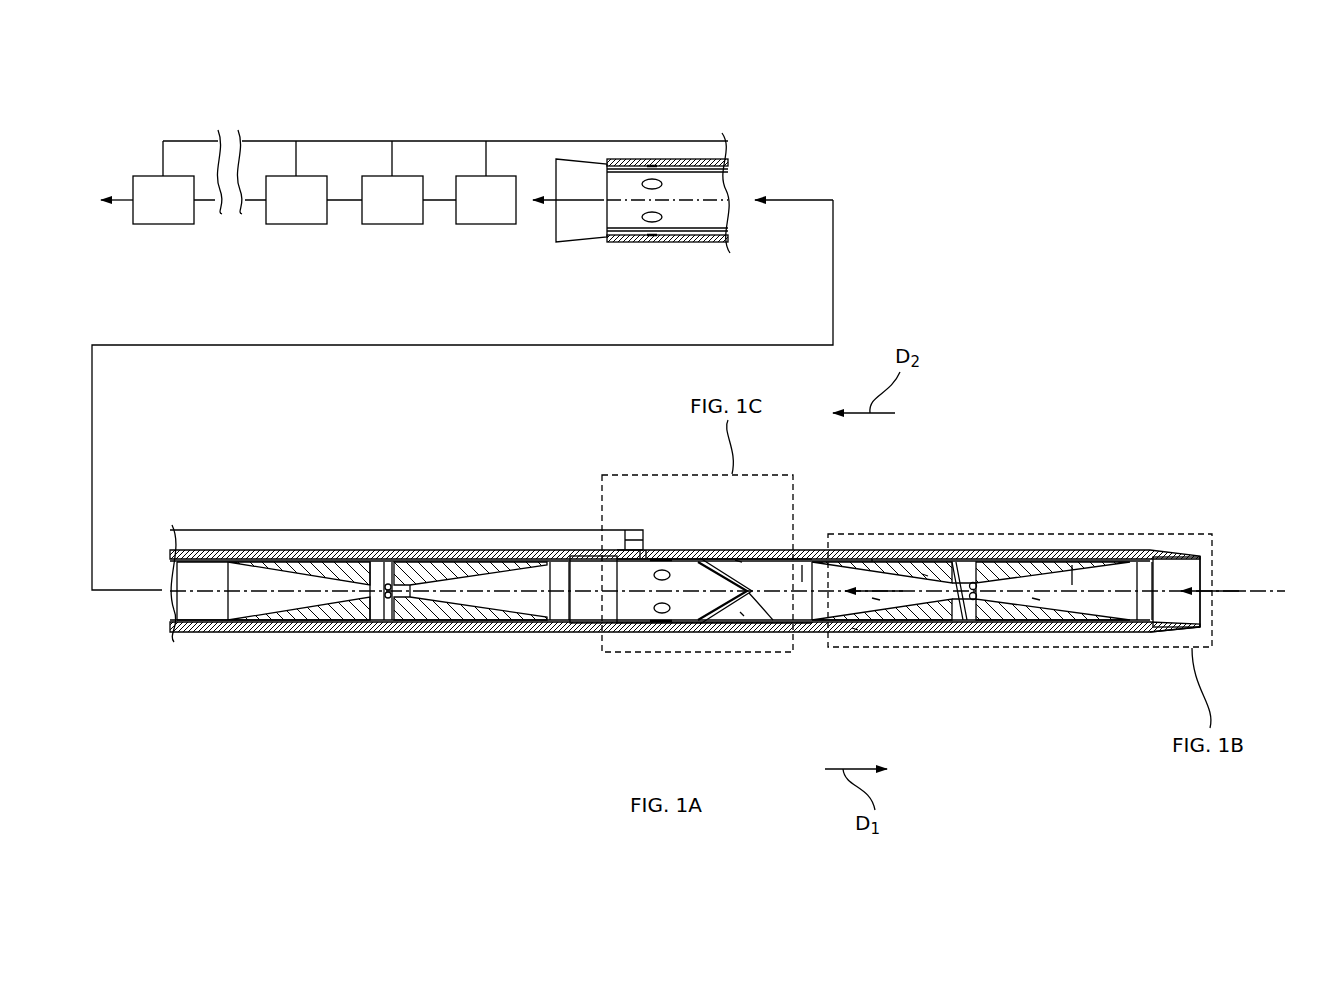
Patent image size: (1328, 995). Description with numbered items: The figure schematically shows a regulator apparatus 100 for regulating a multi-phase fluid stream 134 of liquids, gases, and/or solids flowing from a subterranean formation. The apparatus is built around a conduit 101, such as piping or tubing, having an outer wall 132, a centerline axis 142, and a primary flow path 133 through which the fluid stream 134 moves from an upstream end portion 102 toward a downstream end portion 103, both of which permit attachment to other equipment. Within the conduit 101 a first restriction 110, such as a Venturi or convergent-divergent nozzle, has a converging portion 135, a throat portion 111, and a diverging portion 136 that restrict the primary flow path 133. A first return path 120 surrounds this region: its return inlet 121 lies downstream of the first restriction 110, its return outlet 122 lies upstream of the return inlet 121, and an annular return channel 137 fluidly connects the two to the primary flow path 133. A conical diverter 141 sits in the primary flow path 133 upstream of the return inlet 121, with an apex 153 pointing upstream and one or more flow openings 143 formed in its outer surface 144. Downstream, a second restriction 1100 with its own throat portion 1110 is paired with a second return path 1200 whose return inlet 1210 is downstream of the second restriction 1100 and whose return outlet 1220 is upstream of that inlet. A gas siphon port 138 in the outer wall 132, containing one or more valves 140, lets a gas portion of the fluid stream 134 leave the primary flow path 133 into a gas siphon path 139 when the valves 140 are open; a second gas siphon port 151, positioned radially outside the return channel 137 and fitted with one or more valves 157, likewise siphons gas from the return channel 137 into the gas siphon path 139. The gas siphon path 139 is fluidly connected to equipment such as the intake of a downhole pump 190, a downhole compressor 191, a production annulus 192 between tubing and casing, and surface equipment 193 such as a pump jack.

The regulator apparatus 100 is at (1112, 466).
The conduit 101 is at (1086, 644).
The upstream end portion 102 is at (1183, 556).
The downstream end portion 103 is at (590, 160).
The first restriction 110 is at (1024, 574).
The throat portion 111 is at (926, 574).
The first return path 120 is at (908, 623).
The return inlet 121 is at (660, 560).
The return outlet 122 is at (972, 572).
The outer wall 132 is at (872, 560).
The primary flow path 133 is at (803, 565).
The fluid stream 134 is at (582, 205).
The converging portion 135 is at (1036, 602).
The diverging portion 136 is at (876, 602).
The return channel 137 is at (852, 632).
The gas siphon port 138 is at (620, 576).
The gas siphon path 139 is at (343, 141).
The valves 140 is at (612, 578).
The diverter 141 is at (742, 620).
The centerline axis 142 is at (1267, 591).
The flow openings 143 is at (720, 565).
The outer surface 144 is at (742, 562).
The gas siphon port 151 is at (640, 556).
The apex 153 is at (773, 622).
The valves 157 is at (652, 556).
The pump 190 is at (510, 211).
The downhole compressor 191 is at (417, 211).
The production annulus 192 is at (321, 211).
The surface equipment 193 is at (188, 211).
The second restriction 1100 is at (325, 568).
The throat portion 1110 is at (414, 580).
The second return path 1200 is at (250, 553).
The return inlet 1210 is at (652, 163).
The return outlet 1220 is at (390, 562).